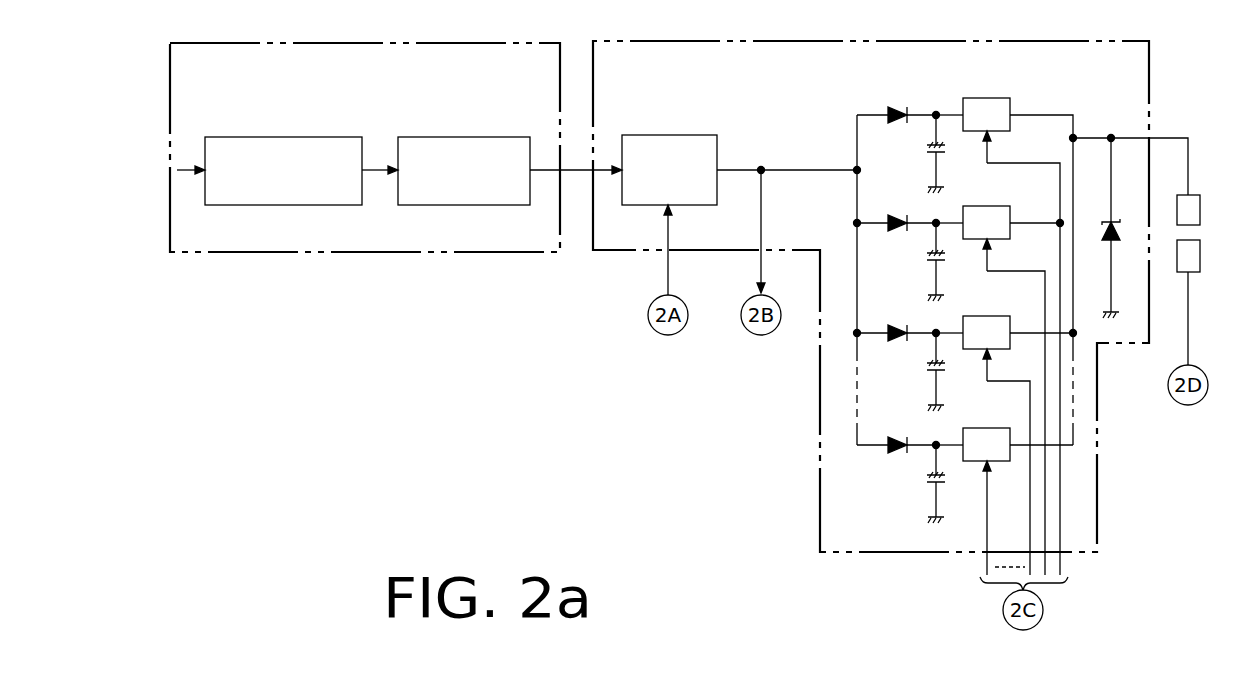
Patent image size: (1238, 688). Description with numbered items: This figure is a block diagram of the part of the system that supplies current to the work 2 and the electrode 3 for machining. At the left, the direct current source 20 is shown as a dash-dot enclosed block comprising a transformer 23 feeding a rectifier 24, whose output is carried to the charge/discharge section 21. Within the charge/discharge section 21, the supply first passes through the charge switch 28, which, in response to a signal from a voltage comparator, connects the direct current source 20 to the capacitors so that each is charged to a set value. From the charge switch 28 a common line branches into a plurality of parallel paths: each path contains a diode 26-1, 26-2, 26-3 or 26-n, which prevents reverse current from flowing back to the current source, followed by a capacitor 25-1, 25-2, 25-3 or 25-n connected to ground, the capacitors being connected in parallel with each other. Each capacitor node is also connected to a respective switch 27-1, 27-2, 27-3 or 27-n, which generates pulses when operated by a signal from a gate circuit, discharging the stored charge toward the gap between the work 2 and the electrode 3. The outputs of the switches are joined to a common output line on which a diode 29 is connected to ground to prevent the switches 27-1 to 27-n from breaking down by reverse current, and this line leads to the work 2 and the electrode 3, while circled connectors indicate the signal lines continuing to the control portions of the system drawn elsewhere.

The direct current source 20 is at (392, 254).
The charge/discharge section 21 is at (820, 518).
The transformer 23 is at (351, 134).
The rectifier 24 is at (511, 134).
The charge switch 28 is at (705, 133).
The diode 26-1 is at (895, 107).
The diode 26-2 is at (895, 215).
The diode 26-3 is at (895, 325).
The diode 26-n is at (895, 437).
The capacitor 25-1 is at (926, 151).
The capacitor 25-2 is at (926, 259).
The capacitor 25-3 is at (926, 369).
The capacitor 25-n is at (926, 481).
The switch 27-1 is at (1006, 98).
The switch 27-2 is at (1006, 206).
The switch 27-3 is at (1006, 316).
The switch 27-n is at (1006, 428).
The diode 29 is at (1120, 232).
The work 2 is at (1200, 216).
The electrode 3 is at (1200, 262).